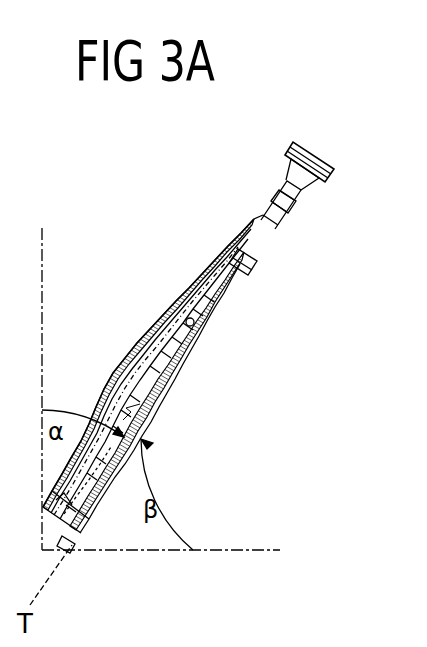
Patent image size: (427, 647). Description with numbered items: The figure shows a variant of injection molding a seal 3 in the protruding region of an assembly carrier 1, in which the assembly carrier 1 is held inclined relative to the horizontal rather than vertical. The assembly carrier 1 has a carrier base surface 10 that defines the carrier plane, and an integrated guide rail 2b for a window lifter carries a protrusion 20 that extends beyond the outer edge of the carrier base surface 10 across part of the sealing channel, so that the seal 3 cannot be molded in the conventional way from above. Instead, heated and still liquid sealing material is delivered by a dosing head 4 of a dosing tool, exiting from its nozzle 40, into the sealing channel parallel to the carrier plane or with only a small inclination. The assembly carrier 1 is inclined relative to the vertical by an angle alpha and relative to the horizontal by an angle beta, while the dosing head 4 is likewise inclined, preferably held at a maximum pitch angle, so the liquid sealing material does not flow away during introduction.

The assembly carrier 1 is at (140, 327).
The guide rail 2b is at (229, 231).
The seal 3 is at (174, 374).
The dosing head 4 is at (331, 149).
The carrier base surface 10 is at (186, 333).
The protrusion 20 is at (249, 228).
The nozzle 40 is at (250, 270).